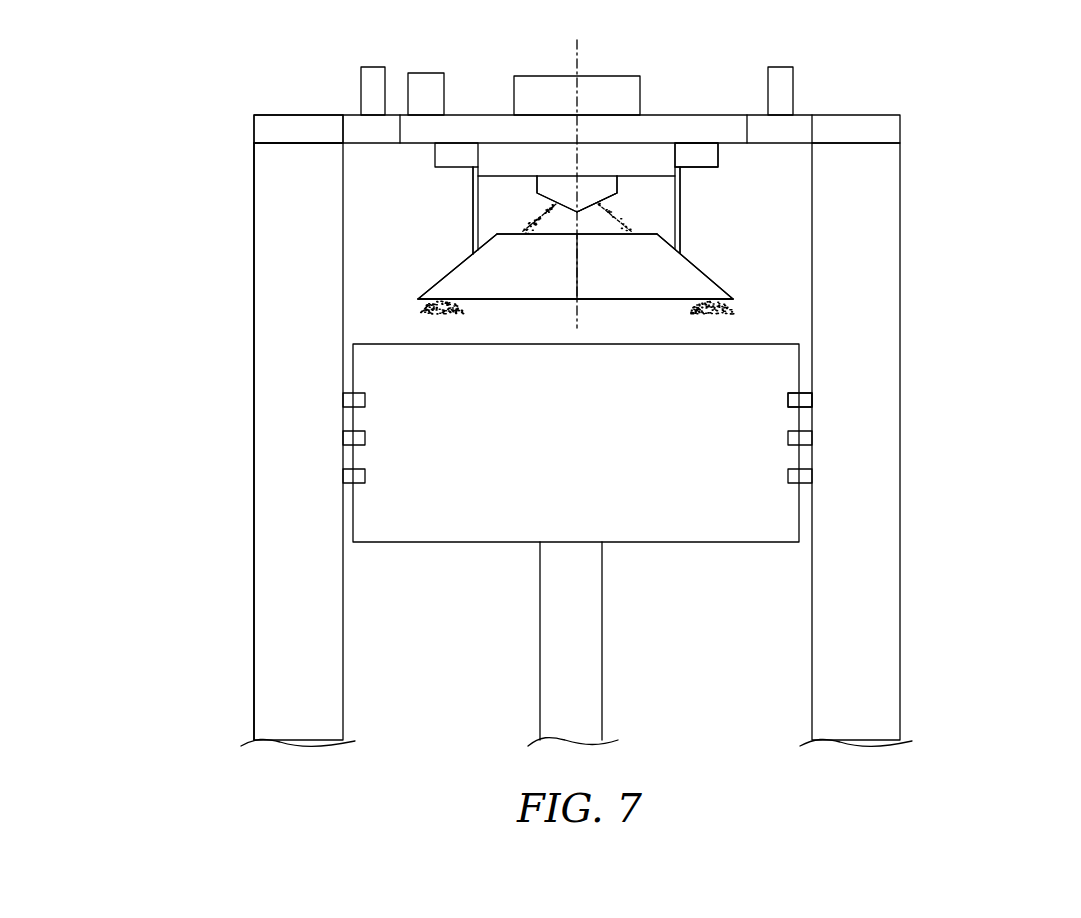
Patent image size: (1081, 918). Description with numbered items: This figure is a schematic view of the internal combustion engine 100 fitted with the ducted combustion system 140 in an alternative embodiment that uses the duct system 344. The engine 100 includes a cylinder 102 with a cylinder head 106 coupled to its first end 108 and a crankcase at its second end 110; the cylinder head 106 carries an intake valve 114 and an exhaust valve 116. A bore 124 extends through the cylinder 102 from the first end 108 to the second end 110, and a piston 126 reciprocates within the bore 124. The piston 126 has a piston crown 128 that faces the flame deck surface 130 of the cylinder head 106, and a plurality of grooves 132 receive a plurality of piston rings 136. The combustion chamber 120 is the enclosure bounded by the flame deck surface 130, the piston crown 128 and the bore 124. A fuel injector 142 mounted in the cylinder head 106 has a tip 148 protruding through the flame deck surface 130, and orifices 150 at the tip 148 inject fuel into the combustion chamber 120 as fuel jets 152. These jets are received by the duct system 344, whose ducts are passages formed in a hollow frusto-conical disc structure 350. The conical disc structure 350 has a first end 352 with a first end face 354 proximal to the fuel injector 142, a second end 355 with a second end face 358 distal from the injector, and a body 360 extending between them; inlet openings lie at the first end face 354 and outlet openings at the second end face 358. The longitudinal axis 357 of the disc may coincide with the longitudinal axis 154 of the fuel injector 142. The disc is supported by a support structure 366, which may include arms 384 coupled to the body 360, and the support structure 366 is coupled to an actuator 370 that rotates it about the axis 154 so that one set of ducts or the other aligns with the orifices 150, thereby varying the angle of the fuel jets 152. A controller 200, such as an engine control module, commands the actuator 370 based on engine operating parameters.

The internal combustion engine 100 is at (982, 112).
The cylinder 102 is at (254, 200).
The cylinder head 106 is at (254, 130).
The first end 108 is at (254, 153).
The second end 110 is at (254, 715).
The intake valve 114 is at (361, 92).
The exhaust valve 116 is at (793, 93).
The combustion chamber 120 is at (782, 253).
The bore 124 is at (795, 203).
The piston 126 is at (800, 517).
The piston crown 128 is at (758, 344).
The flame deck surface 130 is at (718, 145).
The grooves 132 is at (810, 393).
The piston rings 136 is at (812, 417).
The ducted combustion system 140 is at (733, 229).
The fuel injector 142 is at (640, 90).
The tip 148 is at (595, 202).
The orifices 150 is at (558, 202).
The fuel jets 152 is at (533, 217).
The longitudinal axis 154 is at (577, 50).
The controller 200 is at (420, 73).
The duct system 344 is at (742, 292).
The conical disc structure 350 is at (738, 302).
The first end 352 is at (637, 232).
The first end face 354 is at (507, 233).
The second end 355 is at (427, 297).
The longitudinal axis 357 is at (580, 250).
The second end face 358 is at (478, 300).
The body 360 is at (717, 278).
The support structure 366 is at (682, 188).
The actuator 370 is at (435, 152).
The arms 384 is at (472, 234).